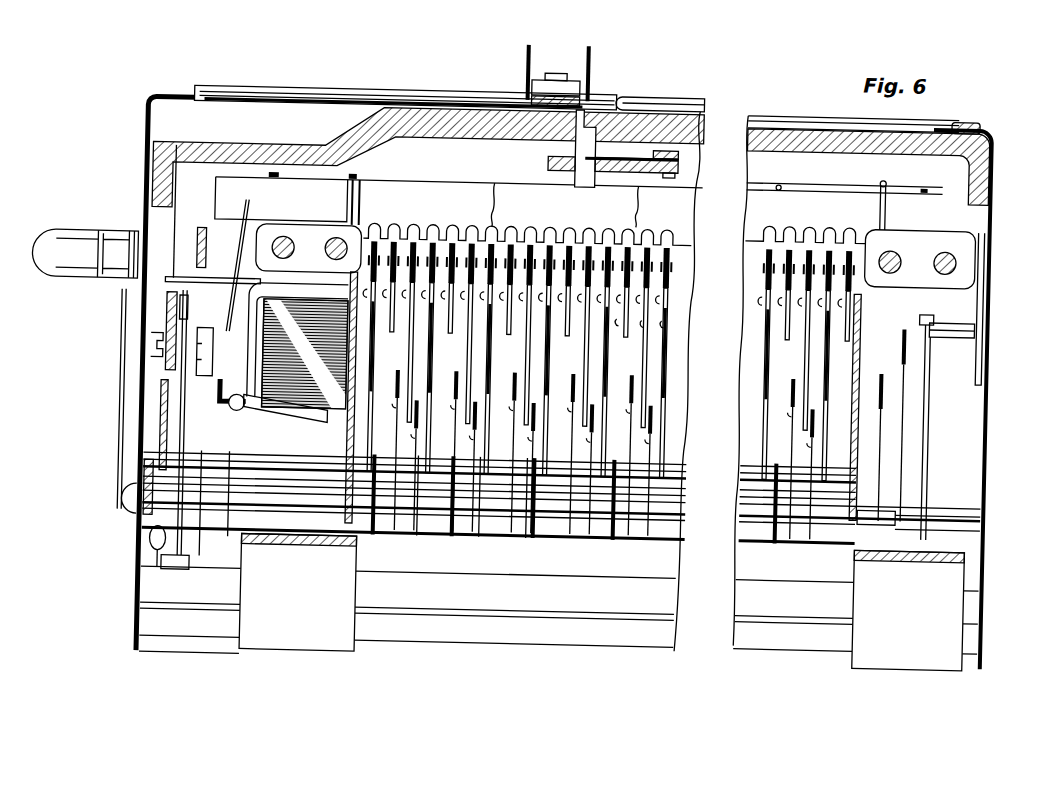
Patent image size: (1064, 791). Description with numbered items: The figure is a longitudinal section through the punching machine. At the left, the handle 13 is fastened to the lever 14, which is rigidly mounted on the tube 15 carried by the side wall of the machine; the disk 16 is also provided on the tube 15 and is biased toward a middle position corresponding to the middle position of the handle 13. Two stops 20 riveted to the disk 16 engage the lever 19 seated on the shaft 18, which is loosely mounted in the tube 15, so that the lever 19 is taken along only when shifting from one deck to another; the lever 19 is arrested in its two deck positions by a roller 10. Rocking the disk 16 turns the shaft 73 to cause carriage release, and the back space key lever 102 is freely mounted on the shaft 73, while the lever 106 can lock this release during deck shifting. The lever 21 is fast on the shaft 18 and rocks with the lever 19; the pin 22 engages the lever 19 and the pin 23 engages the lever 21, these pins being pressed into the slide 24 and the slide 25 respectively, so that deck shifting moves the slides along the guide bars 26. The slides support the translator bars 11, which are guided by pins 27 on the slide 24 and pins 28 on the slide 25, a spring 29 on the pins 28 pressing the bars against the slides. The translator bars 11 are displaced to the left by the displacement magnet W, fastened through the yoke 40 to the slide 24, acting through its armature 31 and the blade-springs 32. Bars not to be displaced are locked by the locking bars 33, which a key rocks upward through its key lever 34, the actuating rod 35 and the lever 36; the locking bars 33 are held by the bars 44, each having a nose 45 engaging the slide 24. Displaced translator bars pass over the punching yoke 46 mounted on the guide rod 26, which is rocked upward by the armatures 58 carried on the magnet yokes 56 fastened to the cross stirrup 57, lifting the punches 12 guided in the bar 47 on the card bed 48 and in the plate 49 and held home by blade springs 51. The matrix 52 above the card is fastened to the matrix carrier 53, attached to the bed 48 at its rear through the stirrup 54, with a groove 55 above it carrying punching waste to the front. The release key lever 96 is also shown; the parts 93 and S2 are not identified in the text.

The roller 10 is at (186, 575).
The translator bars 11 is at (610, 193).
The punches 12 is at (567, 144).
The handle 13 is at (60, 237).
The lever 14 is at (123, 424).
The tube 15 is at (135, 536).
The disk 16 is at (168, 432).
The shaft 18 is at (233, 509).
The lever 19 is at (186, 437).
The stops 20 is at (149, 474).
The lever 21 is at (929, 373).
The pin 22 is at (170, 317).
The pin 23 is at (955, 317).
The slide 24 is at (264, 235).
The slide 25 is at (944, 266).
The bars 26 is at (330, 240).
The pins 27 is at (350, 179).
The pins 28 is at (880, 216).
The spring 29 is at (776, 179).
The armature 31 is at (268, 423).
The blade-springs 32 is at (247, 204).
The locking bars 33 is at (467, 242).
The key lever 34 is at (531, 484).
The actuating rod 35 is at (670, 364).
The lever 36 is at (665, 319).
The yoke 40 is at (245, 424).
The bars 44 is at (678, 222).
The nose 45 is at (363, 226).
The punching yoke 46 is at (196, 233).
The bar 47 is at (670, 168).
The card bed 48 is at (386, 108).
The plate 49 is at (668, 104).
The blade springs 51 is at (677, 146).
The matrix 52 is at (515, 96).
The matrix carrier 53 is at (520, 94).
The stirrup 54 is at (565, 78).
The groove 55 is at (586, 55).
The yokes 56 is at (160, 335).
The cross stirrup 57 is at (165, 305).
The armatures 58 is at (176, 283).
The shaft 73 is at (316, 542).
The guide bar 93 is at (535, 497).
The key lever 96 is at (887, 419).
The key lever 102 is at (907, 393).
The lever 106 is at (893, 509).
The armature S2 is at (212, 364).
The displacement magnet W is at (308, 402).